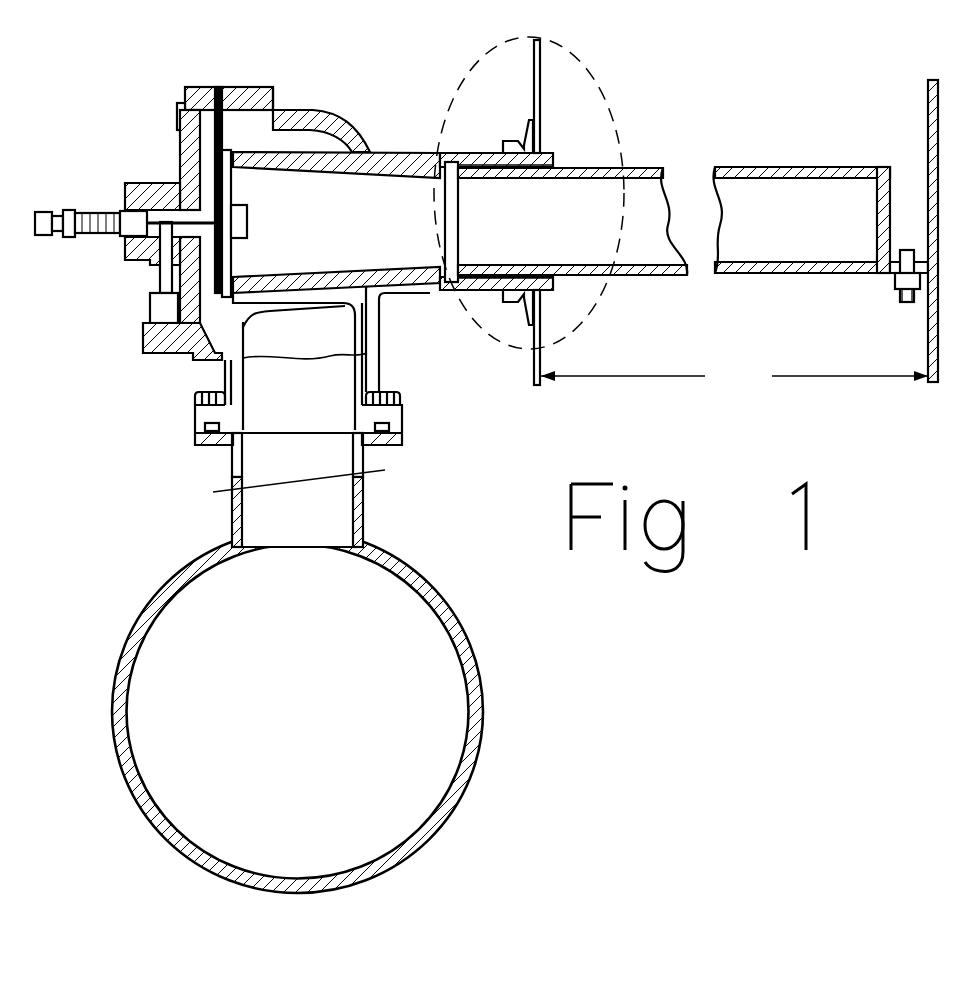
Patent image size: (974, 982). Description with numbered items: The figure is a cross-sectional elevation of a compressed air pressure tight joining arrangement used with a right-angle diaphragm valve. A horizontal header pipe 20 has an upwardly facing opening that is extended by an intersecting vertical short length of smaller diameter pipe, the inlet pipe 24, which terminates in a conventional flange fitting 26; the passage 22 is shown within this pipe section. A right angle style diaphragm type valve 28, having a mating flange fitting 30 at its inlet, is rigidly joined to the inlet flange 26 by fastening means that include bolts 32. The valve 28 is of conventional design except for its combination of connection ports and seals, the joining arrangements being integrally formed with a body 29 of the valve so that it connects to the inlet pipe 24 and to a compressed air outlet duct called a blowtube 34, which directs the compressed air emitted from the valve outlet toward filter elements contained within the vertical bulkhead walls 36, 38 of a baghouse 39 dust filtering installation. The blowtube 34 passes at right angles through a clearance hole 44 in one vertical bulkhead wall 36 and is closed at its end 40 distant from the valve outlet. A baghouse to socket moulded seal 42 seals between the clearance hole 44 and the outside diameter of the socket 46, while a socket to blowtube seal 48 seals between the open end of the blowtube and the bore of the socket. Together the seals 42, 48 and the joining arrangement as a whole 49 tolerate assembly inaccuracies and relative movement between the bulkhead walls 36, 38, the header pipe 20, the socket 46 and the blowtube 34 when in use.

The header pipe 20 is at (171, 574).
The neck pipe 22 is at (310, 530).
The inlet pipe 24 is at (226, 480).
The flange fitting 26 is at (403, 440).
The diaphragm type valve 28 is at (288, 104).
The body 29 is at (344, 120).
The mating flange fitting 30 is at (405, 415).
The bolts 32 is at (393, 392).
The blowtube 34 is at (690, 165).
The vertical bulkhead wall 36 is at (541, 385).
The vertical bulkhead wall 38 is at (927, 254).
The baghouse 39 is at (734, 379).
The end 40 is at (893, 183).
The baghouse to socket moulded seal 42 is at (530, 118).
The clearance hole 44 is at (545, 296).
The socket 46 is at (553, 150).
The socket to blowtube seal 48 is at (518, 172).
The joining arrangement 49 is at (583, 50).